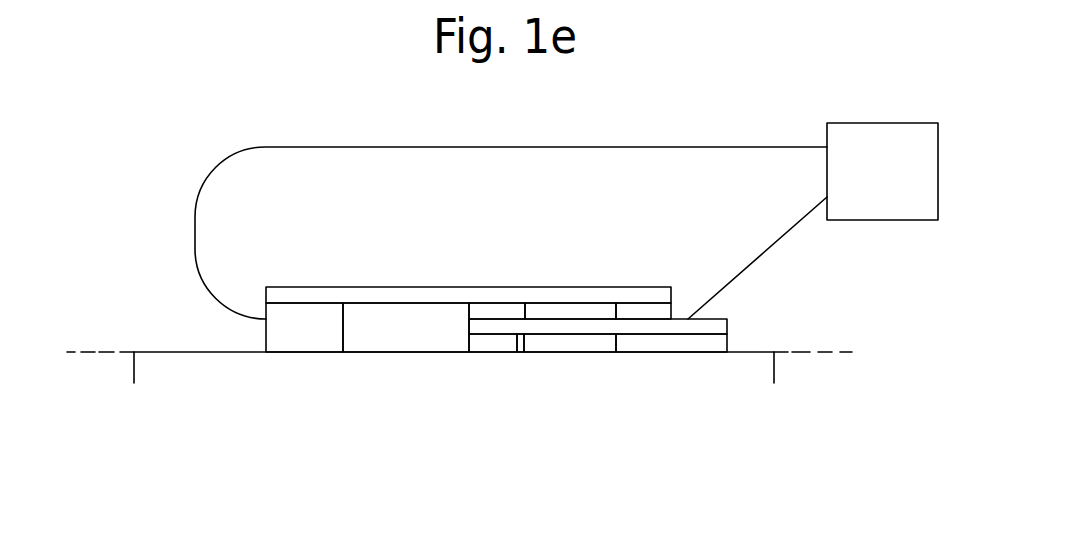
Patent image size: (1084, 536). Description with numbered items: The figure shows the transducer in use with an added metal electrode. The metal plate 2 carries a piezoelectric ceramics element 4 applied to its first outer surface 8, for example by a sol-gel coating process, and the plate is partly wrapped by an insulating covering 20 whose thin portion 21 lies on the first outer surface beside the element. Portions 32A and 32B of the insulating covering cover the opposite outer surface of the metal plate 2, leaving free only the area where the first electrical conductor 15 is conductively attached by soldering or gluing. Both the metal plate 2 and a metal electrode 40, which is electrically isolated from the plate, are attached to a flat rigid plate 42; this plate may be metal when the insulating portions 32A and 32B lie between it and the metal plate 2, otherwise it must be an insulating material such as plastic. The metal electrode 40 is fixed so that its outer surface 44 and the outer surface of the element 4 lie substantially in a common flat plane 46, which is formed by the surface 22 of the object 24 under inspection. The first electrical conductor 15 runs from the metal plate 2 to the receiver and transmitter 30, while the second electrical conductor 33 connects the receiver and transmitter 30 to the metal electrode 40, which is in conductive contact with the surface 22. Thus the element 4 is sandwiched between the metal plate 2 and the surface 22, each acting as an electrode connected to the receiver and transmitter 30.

The second electrical conductor 33 is at (281, 146).
The receiver and transmitter 30 is at (862, 122).
The first electrical conductor 15 is at (767, 250).
The flat rigid plate 42 is at (400, 286).
The outer surface of the metal electrode 44 is at (278, 353).
The metal electrode 40 is at (313, 333).
The portion of the insulating covering 32B is at (492, 307).
The portion of the insulating covering 32A is at (568, 310).
The metal plate 2 is at (727, 326).
The insulating covering 20 is at (485, 344).
The portion of the covering 21 is at (687, 345).
The first outer surface 8 is at (518, 338).
The piezoelectric ceramics element 4 is at (593, 344).
The surface of the object 22 is at (167, 350).
The flat plane 46 is at (95, 350).
The object 24 is at (134, 371).